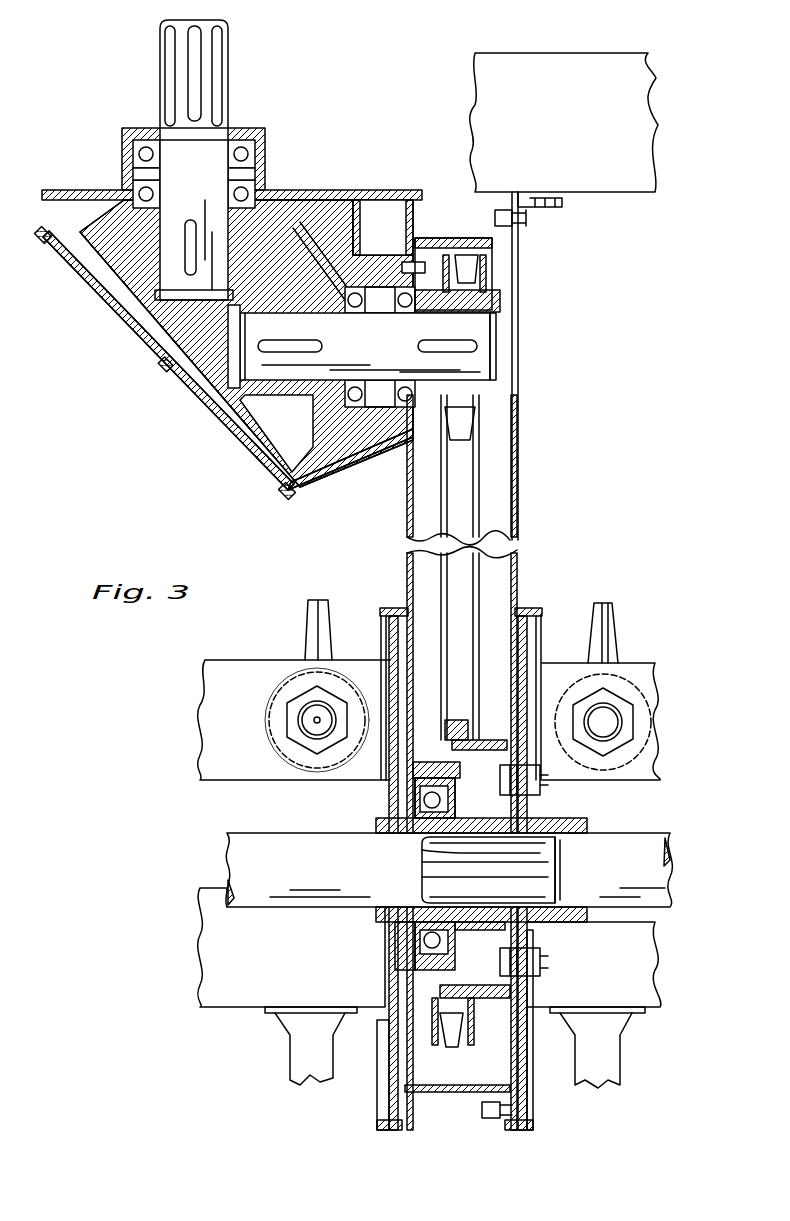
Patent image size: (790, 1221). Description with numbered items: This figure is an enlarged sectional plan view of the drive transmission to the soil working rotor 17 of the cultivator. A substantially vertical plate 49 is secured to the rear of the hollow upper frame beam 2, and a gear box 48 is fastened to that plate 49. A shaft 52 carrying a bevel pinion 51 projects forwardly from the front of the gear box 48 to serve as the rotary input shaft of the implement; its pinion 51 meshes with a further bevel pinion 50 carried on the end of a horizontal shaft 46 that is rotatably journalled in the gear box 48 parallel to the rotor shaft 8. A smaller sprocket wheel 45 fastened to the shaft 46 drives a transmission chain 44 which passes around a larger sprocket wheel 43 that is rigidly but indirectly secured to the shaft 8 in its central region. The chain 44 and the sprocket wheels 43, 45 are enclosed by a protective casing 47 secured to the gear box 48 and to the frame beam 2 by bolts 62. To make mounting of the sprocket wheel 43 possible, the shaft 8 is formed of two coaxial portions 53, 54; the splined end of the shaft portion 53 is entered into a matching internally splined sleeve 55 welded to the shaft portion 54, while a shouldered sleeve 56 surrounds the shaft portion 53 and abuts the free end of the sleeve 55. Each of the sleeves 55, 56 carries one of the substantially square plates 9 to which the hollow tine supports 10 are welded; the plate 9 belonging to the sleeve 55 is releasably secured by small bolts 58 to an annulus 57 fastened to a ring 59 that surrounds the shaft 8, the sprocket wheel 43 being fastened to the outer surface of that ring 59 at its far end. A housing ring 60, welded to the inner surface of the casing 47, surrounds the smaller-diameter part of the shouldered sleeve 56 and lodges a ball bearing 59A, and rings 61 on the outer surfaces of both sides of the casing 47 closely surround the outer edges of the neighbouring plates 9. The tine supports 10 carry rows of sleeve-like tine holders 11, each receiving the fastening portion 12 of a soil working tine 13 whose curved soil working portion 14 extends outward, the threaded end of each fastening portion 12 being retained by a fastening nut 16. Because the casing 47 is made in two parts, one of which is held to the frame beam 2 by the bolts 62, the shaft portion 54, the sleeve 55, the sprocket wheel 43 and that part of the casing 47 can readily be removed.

The upper frame beam 2 is at (490, 72).
The shaft 8 is at (660, 836).
The plates 9 is at (385, 628).
The tine supports 10 is at (203, 678).
The tine holders 11 is at (268, 713).
The fastening portion 12 is at (316, 718).
The soil working tine 13 is at (292, 1050).
The soil working portion 14 is at (303, 612).
The fastening nut 16 is at (283, 745).
The soil working rotor 17 is at (660, 760).
The sprocket wheel 43 is at (455, 1035).
The transmission chain 44 is at (478, 500).
The smaller sprocket wheel 45 is at (468, 280).
The horizontal shaft 46 is at (237, 333).
The protective casing 47 is at (515, 456).
The gear box 48 is at (374, 432).
The vertical plate 49 is at (335, 190).
The bevel pinion 50 is at (258, 416).
The further bevel pinion 51 is at (113, 265).
The rotary input shaft 52 is at (175, 62).
The shaft portion 53 is at (268, 835).
The shaft portion 54 is at (650, 925).
The splined sleeve 55 is at (586, 825).
The shouldered sleeve 56 is at (377, 920).
The annulus 57 is at (505, 926).
The small bolts 58 is at (548, 780).
The ring 59 is at (487, 1025).
The ball bearing 59A is at (463, 870).
The housing ring 60 is at (425, 958).
The rings 61 is at (390, 607).
The bolts 62 is at (525, 222).